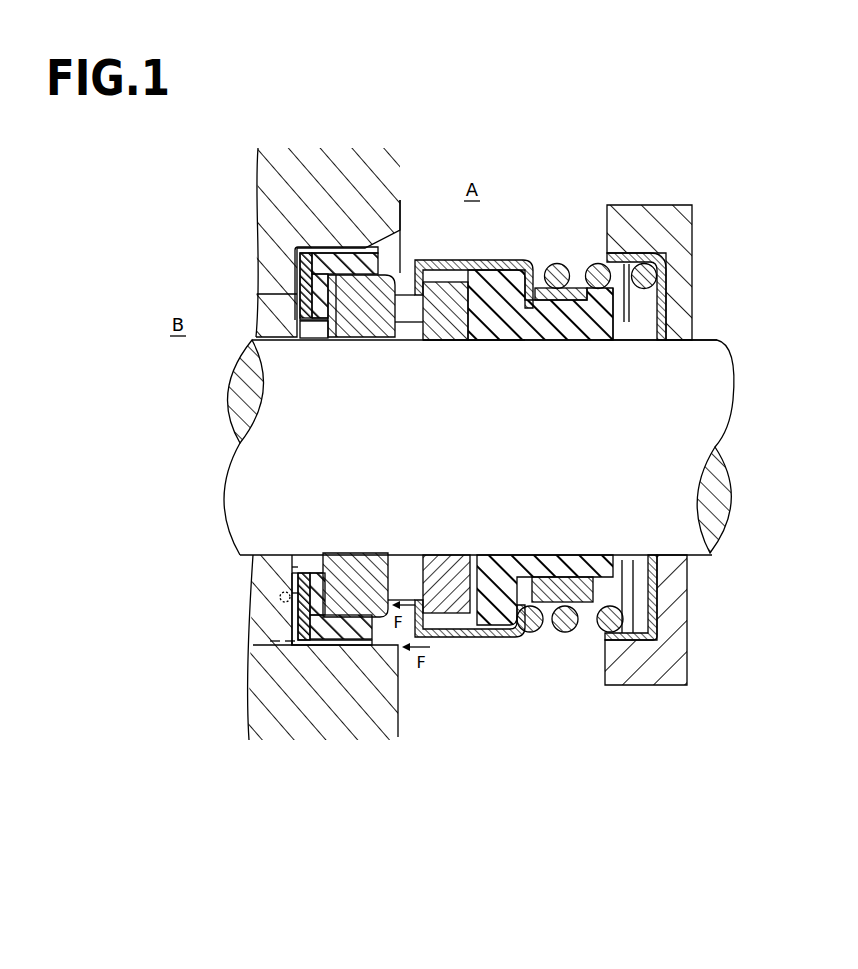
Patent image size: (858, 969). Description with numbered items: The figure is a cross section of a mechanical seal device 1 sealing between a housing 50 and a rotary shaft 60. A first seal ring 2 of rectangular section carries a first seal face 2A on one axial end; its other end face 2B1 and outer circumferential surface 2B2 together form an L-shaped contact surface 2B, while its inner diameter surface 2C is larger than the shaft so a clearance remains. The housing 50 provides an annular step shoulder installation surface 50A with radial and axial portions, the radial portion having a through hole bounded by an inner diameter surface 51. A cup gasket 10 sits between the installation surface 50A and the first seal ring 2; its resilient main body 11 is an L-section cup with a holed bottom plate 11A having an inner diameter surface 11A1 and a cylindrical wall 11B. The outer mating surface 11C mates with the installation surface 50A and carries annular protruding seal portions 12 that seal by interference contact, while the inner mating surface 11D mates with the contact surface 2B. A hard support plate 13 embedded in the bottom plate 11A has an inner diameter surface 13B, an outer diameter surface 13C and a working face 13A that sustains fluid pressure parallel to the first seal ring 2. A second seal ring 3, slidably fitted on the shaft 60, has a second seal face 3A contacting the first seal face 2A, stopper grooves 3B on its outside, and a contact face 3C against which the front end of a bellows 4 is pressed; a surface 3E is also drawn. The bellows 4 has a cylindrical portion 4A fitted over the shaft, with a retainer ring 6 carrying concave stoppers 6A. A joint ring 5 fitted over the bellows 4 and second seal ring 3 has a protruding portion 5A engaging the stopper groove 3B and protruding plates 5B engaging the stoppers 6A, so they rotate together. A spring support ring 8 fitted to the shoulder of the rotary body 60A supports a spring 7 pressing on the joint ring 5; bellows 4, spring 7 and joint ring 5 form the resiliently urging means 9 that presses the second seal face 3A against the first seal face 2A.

The mechanical seal device 1 is at (730, 127).
The first seal ring 2 is at (352, 250).
The first seal face 2A is at (432, 322).
The contact surface 2B is at (350, 250).
The other end face 2B1 is at (303, 338).
The outer circumferential surface 2B2 is at (375, 640).
The inner diameter surface 2C is at (372, 572).
The second seal ring 3 is at (412, 272).
The second seal face 3A is at (379, 335).
The stopper groove 3B is at (432, 258).
The contact face 3C is at (468, 575).
The retainer flange 3E is at (450, 638).
The bellows 4 is at (497, 262).
The cylindrical portion 4A is at (502, 335).
The joint ring 5 is at (505, 262).
The protruding portion 5A is at (452, 338).
The protruding plate 5B is at (545, 341).
The retainer ring 6 is at (545, 262).
The concave stopper 6A is at (575, 293).
The spring 7 is at (602, 286).
The spring support ring 8 is at (645, 254).
The resiliently urging means 9 is at (528, 258).
The cup gasket 10 is at (297, 300).
The main body 11 is at (312, 250).
The holed bottom plate 11A is at (292, 593).
The inner diameter surface 11A1 is at (292, 567).
The cylindrical wall 11B is at (347, 572).
The outer mating surface 11C is at (275, 641).
The inner mating surface 11D is at (330, 566).
The seal portion 12 is at (250, 650).
The support plate 13 is at (296, 603).
The working face 13A is at (330, 328).
The inner diameter surface 13B is at (303, 553).
The outer diameter surface 13C is at (290, 641).
The housing 50 is at (255, 171).
The step shoulder installation surface 50A is at (253, 642).
The inner diameter surface 51 is at (292, 585).
The rotary shaft 60 is at (690, 428).
The rotary body 60A is at (677, 238).